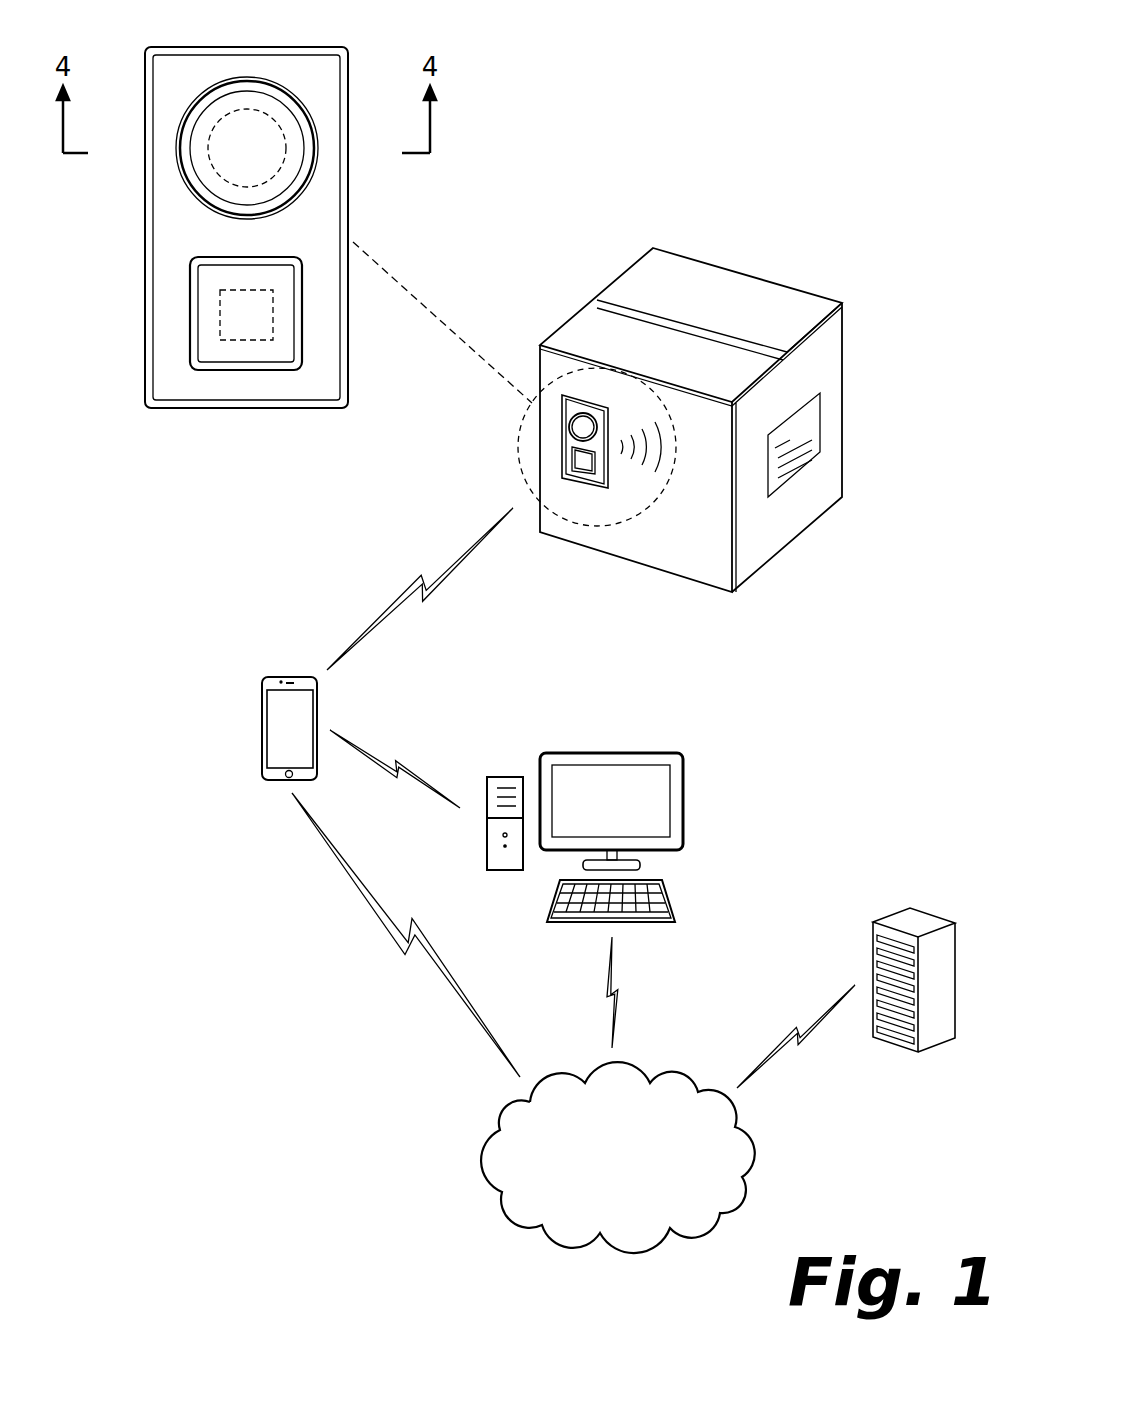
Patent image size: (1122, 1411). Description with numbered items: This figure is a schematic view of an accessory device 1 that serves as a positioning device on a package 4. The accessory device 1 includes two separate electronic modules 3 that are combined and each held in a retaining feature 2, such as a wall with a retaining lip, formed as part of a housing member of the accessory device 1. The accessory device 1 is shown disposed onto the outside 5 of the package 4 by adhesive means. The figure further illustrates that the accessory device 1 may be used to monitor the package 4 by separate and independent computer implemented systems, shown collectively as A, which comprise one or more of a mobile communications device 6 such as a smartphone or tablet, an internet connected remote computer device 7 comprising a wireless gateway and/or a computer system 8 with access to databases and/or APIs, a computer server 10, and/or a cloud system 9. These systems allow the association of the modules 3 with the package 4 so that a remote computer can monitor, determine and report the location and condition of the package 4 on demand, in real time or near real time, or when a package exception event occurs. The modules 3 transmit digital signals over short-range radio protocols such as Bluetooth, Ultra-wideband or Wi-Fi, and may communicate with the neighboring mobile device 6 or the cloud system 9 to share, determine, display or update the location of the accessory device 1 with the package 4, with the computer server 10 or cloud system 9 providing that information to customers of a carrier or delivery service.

The accessory device 1 is at (190, 72).
The retaining feature 2 is at (312, 130).
The electronic module 3 is at (198, 135).
The package 4 is at (757, 310).
The outside of package 5 is at (558, 428).
The mobile communications device 6 is at (262, 727).
The remote computer device 7 is at (610, 753).
The computer system 8 is at (617, 806).
The cloud system 9 is at (675, 1075).
The computer server 10 is at (930, 913).
The computer implemented systems A is at (158, 680).